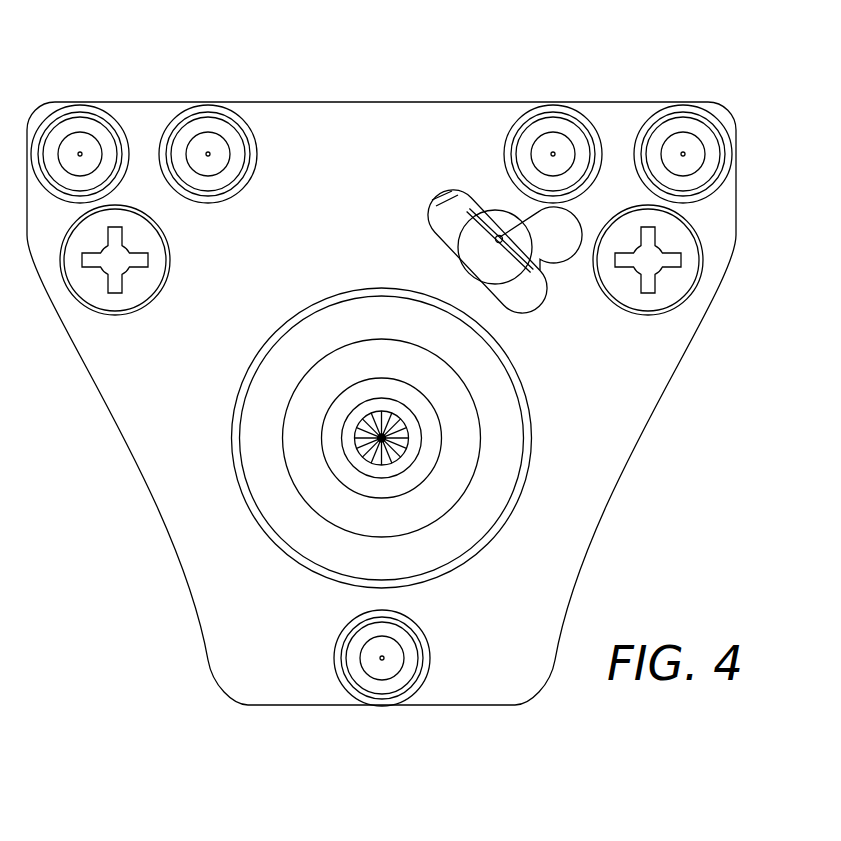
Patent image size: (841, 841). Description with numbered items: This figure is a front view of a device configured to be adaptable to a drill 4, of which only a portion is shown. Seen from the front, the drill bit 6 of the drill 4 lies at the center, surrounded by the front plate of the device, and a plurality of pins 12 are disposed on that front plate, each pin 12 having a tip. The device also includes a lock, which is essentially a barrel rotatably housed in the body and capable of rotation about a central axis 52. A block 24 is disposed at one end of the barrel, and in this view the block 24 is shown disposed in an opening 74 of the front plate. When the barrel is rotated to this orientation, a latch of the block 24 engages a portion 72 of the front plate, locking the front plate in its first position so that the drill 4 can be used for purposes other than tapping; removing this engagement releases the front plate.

The pins 12 is at (80, 133).
The drill 4 is at (482, 423).
The drill bit 6 is at (408, 442).
The opening 74 is at (427, 207).
The block 24 is at (490, 263).
The portion 72 is at (550, 243).
The central axis 52 is at (499, 236).